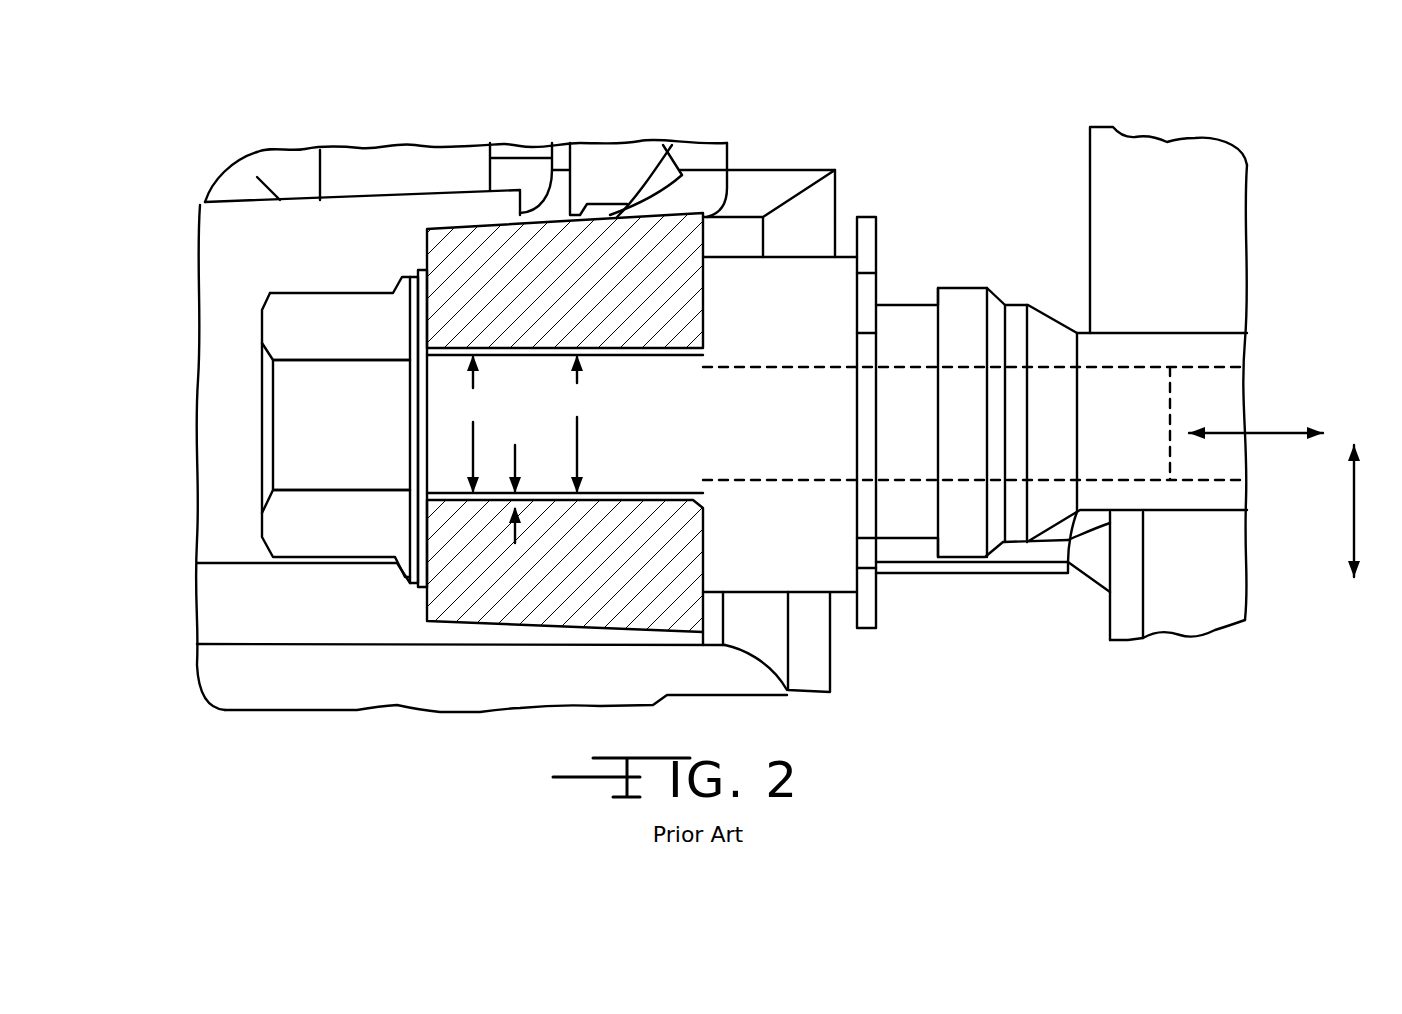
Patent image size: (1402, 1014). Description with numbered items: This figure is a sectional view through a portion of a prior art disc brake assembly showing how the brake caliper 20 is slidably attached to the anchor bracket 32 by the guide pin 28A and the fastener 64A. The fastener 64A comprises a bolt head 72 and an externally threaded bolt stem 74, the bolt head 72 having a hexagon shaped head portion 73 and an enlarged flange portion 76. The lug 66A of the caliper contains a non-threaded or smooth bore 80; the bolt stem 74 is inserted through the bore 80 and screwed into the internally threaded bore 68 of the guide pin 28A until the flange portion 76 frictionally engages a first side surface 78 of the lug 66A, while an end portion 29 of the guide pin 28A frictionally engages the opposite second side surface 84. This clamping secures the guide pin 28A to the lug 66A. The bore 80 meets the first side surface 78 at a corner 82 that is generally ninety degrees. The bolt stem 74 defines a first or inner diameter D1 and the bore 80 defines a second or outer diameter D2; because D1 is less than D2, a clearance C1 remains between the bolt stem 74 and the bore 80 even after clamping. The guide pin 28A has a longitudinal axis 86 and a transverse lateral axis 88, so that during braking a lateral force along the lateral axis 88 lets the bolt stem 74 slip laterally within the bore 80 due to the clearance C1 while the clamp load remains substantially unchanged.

The brake caliper 20 is at (588, 176).
The guide pin 28A is at (1216, 348).
The end portion 29 is at (802, 567).
The anchor bracket 32 is at (1199, 223).
The fastener 64A is at (234, 462).
The lug 66A is at (603, 250).
The internally threaded bore 68 is at (1205, 410).
The bolt head 72 is at (290, 330).
The hexagon shaped head portion 73 is at (280, 528).
The bolt stem 74 is at (805, 392).
The flange portion 76 is at (446, 316).
The first side surface 78 is at (420, 607).
The bore 80 is at (605, 452).
The corner 82 is at (462, 312).
The second side surface 84 is at (703, 278).
The longitudinal axis 86 is at (1280, 440).
The lateral axis 88 is at (1354, 527).
The first diameter D1 is at (574, 424).
The second diameter D2 is at (471, 424).
The clearance C1 is at (514, 510).